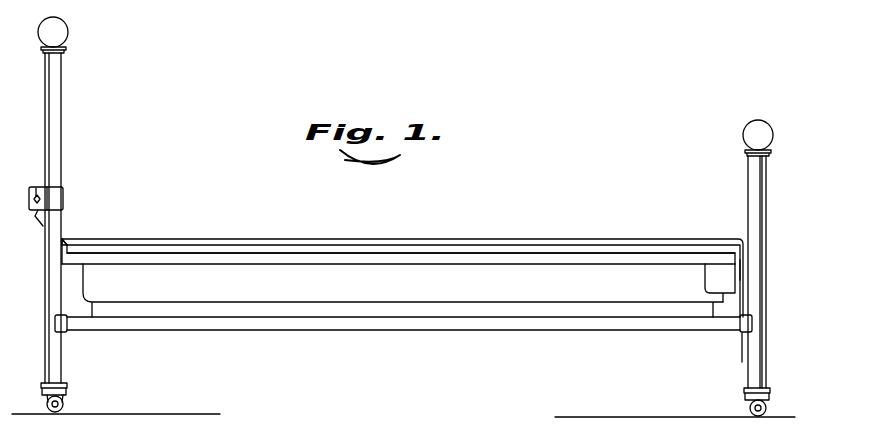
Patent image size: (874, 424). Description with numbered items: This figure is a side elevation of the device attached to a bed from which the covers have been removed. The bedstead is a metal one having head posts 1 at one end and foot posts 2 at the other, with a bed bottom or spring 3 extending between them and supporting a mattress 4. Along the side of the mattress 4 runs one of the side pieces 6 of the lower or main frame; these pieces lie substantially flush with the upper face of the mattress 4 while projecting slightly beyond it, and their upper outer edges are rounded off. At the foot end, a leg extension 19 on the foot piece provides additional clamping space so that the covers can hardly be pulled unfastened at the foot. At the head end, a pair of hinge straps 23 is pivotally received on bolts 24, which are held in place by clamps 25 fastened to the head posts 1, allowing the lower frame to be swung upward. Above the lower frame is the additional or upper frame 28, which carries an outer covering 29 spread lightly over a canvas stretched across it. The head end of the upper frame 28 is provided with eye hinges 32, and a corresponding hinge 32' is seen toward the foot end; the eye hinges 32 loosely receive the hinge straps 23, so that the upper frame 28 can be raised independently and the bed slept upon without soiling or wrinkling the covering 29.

The head posts 1 is at (63, 155).
The foot posts 2 is at (757, 197).
The bed bottom or spring 3 is at (392, 310).
The mattress 4 is at (333, 275).
The side pieces 6 is at (475, 257).
The leg extension 19 is at (710, 282).
The hinge straps 23 is at (44, 225).
The bolts 24 is at (37, 187).
The clamps 25 is at (64, 196).
The upper frame 28 is at (547, 242).
The outer covering 29 is at (646, 242).
The eye hinges 32 is at (92, 228).
The end fitting 32' is at (772, 268).